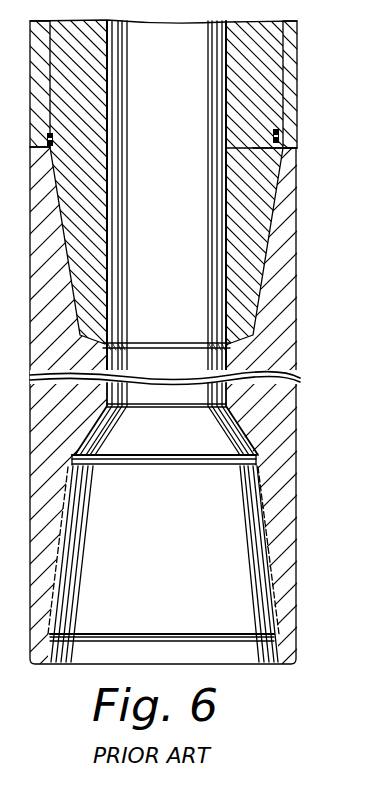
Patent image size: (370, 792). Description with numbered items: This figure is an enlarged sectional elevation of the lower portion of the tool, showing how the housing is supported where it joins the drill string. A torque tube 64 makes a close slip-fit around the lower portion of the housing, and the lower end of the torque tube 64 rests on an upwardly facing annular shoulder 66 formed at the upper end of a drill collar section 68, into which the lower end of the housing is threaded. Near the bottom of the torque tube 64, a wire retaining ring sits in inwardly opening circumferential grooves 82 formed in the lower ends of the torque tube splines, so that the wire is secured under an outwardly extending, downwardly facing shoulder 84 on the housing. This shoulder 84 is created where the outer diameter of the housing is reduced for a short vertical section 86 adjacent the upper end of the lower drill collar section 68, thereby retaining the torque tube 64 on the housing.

The torque tube 64 is at (297, 98).
The annular shoulder 66 is at (278, 134).
The drill collar section 68 is at (298, 179).
The circumferential grooves 82 is at (279, 144).
The shoulder 84 is at (277, 124).
The vertical section 86 is at (265, 147).